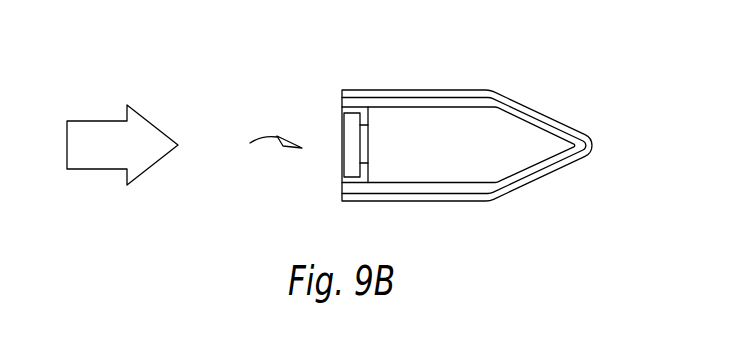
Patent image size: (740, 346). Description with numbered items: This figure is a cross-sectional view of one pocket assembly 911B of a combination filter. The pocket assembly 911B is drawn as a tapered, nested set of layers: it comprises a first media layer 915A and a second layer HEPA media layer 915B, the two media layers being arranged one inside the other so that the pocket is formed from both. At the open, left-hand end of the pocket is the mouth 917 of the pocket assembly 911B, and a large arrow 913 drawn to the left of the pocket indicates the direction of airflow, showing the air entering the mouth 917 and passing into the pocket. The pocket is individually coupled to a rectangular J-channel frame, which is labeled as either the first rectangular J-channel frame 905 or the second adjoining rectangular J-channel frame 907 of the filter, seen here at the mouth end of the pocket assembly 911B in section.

The pocket assembly 911B is at (434, 144).
The first rectangular J-channel frame 905 is at (401, 144).
The second adjoining rectangular J-channel frame 907 is at (342, 107).
The first media layer 915A is at (342, 183).
The second layer HEPA media layer 915B is at (412, 201).
The mouth 917 is at (259, 150).
The arrow 913 is at (98, 169).